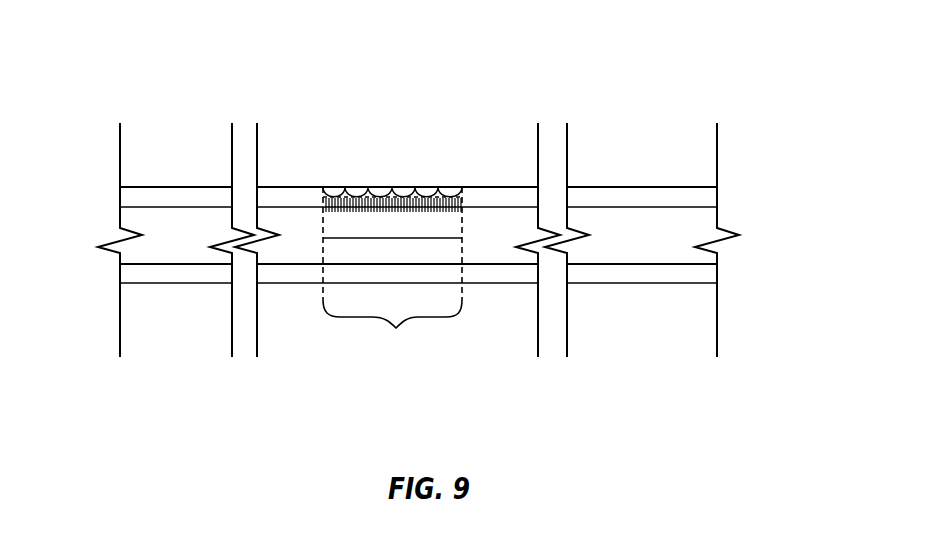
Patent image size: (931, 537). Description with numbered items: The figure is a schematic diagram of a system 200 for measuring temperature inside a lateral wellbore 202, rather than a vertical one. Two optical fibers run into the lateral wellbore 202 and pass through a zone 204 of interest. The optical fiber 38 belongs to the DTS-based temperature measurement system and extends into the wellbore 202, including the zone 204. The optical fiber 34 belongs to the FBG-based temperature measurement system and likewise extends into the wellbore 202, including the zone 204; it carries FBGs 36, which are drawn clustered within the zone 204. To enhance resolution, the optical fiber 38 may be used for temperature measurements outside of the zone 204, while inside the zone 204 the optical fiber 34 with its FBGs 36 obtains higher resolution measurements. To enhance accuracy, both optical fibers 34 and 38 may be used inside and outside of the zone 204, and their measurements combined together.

The system 200 is at (503, 76).
The lateral wellbore 202 is at (272, 186).
The zone of interest 204 is at (396, 328).
The optical fiber 34 is at (187, 206).
The FBGs 36 is at (478, 163).
The optical fiber 38 is at (187, 265).